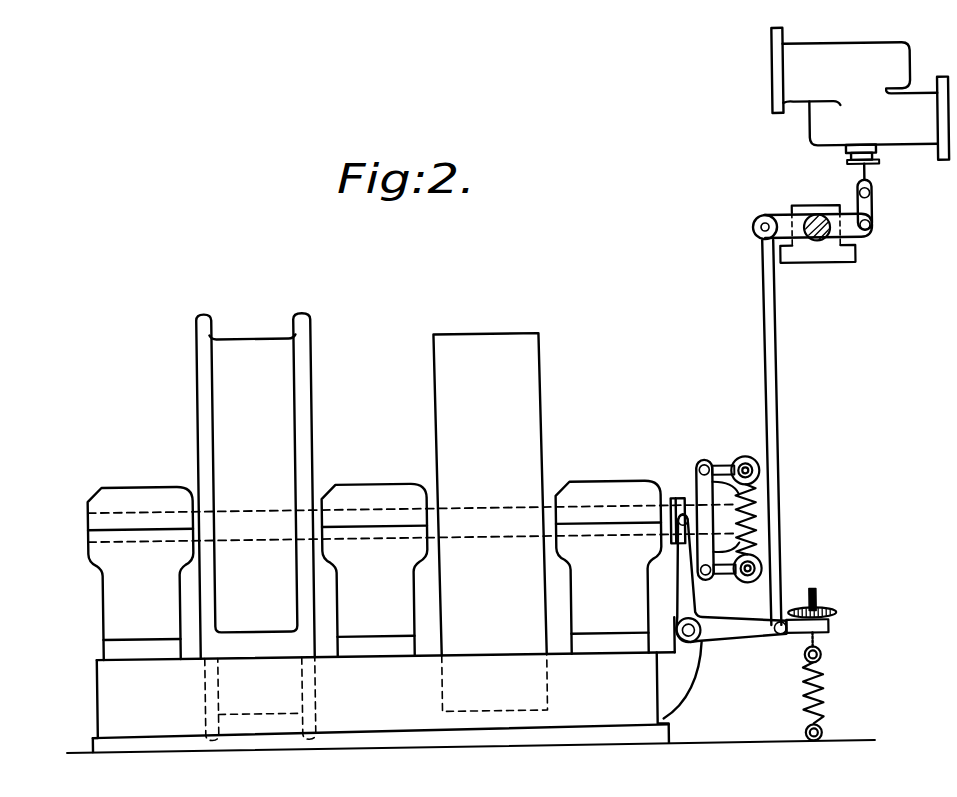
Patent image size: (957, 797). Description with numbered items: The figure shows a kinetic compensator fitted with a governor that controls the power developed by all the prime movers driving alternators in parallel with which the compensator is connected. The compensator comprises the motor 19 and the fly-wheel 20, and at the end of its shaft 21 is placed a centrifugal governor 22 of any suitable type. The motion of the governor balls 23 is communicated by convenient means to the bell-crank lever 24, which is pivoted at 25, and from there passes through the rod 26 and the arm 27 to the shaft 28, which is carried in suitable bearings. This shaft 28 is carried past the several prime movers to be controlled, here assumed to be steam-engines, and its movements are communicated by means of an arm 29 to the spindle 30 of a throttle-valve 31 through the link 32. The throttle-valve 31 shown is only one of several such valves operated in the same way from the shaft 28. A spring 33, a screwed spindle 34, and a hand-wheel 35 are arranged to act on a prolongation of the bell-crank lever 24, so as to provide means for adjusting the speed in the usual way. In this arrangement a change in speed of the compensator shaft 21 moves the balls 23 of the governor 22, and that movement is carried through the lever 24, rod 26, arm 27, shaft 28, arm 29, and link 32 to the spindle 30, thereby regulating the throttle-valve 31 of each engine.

The motor 19 is at (256, 526).
The fly-wheel 20 is at (490, 522).
The shaft 21 is at (554, 512).
The centrifugal governor 22 is at (710, 464).
The balls 23 is at (747, 462).
The bell-crank lever 24 is at (686, 596).
The pivot 25 is at (701, 644).
The rod 26 is at (778, 343).
The arm 27 is at (755, 213).
The shaft 28 is at (822, 246).
The arm 29 is at (863, 241).
The spindle 30 is at (873, 181).
The throttle-valve 31 is at (860, 94).
The link 32 is at (877, 211).
The spring 33 is at (824, 696).
The screwed spindle 34 is at (816, 596).
The hand-wheel 35 is at (837, 619).